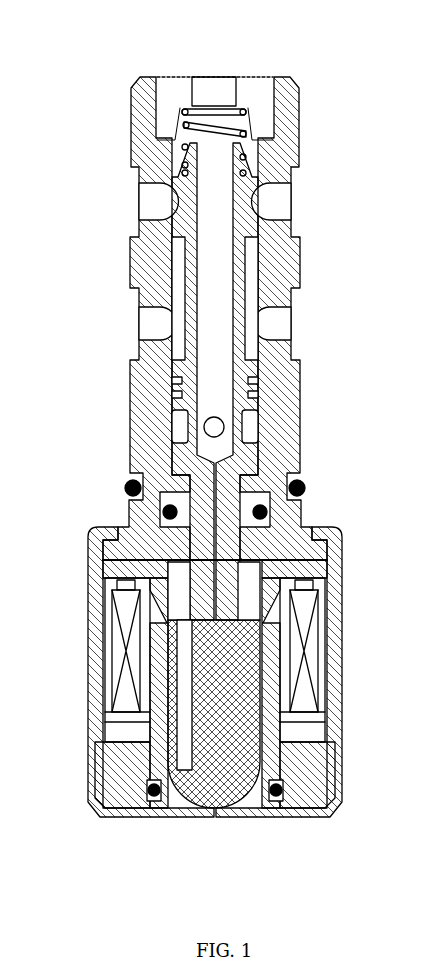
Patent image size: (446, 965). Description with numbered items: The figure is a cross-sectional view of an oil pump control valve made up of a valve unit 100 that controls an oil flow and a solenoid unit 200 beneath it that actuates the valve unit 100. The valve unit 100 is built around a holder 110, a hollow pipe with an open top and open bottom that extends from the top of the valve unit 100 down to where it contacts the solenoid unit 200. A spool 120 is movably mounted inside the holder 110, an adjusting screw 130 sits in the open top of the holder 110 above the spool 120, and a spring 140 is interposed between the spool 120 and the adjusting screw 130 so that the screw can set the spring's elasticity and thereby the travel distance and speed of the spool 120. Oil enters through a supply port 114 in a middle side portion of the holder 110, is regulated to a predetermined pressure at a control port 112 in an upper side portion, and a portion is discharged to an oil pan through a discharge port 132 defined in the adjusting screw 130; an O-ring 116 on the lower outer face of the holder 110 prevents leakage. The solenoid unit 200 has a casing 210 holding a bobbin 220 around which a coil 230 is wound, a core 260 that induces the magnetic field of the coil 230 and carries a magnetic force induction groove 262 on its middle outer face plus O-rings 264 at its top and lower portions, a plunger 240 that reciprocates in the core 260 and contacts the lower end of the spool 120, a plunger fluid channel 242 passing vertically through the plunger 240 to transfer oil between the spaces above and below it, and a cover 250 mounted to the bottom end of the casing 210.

The valve unit 100 is at (193, 317).
The holder 110 is at (300, 100).
The control port 112 is at (270, 203).
The supply port 114 is at (270, 325).
The O-ring 116 is at (306, 488).
The spool 120 is at (247, 458).
The adjusting screw 130 is at (256, 88).
The discharge port 132 is at (213, 88).
The spring 140 is at (247, 128).
The solenoid unit 200 is at (217, 702).
The casing 210 is at (335, 713).
The bobbin 220 is at (143, 665).
The coil 230 is at (310, 653).
The plunger 240 is at (227, 767).
The plunger fluid channel 242 is at (183, 770).
The cover 250 is at (312, 797).
The core 260 is at (270, 570).
The magnetic force induction groove 262 is at (265, 627).
The O-ring 264 is at (275, 790).